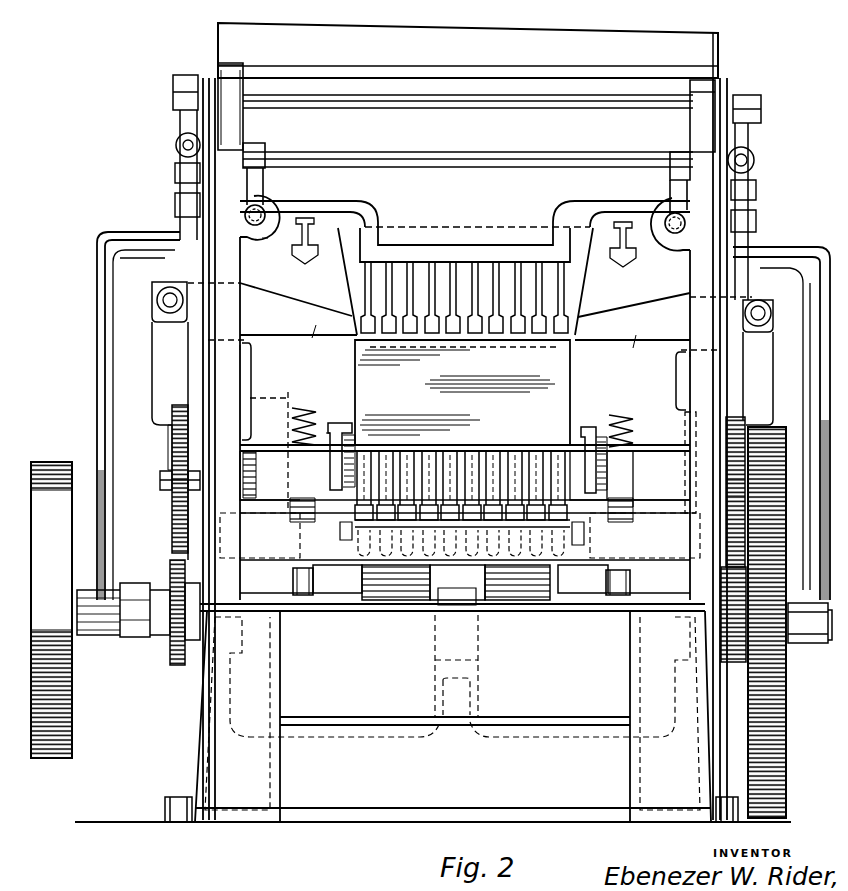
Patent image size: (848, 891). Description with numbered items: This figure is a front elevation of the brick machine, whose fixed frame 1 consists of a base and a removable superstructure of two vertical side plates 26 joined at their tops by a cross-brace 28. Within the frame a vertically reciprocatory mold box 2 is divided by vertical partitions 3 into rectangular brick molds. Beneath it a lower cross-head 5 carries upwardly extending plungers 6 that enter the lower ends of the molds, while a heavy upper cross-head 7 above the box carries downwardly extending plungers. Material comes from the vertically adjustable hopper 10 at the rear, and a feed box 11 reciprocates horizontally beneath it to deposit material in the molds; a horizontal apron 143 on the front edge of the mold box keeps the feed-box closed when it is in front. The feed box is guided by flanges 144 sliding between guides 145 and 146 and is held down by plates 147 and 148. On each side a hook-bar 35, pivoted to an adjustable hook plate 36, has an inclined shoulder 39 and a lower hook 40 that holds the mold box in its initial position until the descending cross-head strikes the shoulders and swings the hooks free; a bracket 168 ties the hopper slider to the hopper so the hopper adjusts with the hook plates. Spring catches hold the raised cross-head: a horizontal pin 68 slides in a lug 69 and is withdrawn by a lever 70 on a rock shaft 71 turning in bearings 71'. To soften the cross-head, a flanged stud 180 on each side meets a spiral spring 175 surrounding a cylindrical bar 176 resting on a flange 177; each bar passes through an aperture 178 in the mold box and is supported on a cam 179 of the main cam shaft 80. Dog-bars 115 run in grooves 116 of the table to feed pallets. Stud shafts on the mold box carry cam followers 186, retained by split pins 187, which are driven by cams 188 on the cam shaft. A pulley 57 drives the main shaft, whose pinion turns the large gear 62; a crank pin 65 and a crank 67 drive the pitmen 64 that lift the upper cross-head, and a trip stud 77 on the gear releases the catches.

The frame 1 is at (232, 49).
The cross-brace 28 is at (624, 45).
The side plate 26 is at (234, 130).
The vertically adjustable plate 36 is at (170, 96).
The rock shaft 71 is at (468, 131).
The bearing 71' is at (466, 153).
The lever 70 is at (262, 182).
The horizontal pin 68 is at (250, 224).
The lug 69 is at (270, 240).
The upper cross-head 7 is at (465, 215).
The flanged stud 180 is at (330, 232).
The hopper 10 is at (340, 276).
The inclined shoulder 39 is at (245, 342).
The vertically movable bracket 168 is at (464, 347).
The hook-bar 35 is at (250, 378).
The feed box 11 is at (575, 376).
The flange 144 is at (344, 425).
The plate 148 is at (330, 418).
The guide 146 is at (328, 425).
The guide 145 is at (585, 428).
The plate 147 is at (602, 432).
The spiral spring 175 is at (292, 422).
The apron 143 is at (525, 440).
The aperture 178 is at (288, 458).
The mold box 2 is at (259, 475).
The hook 40 is at (670, 500).
The vertical partition 3 is at (418, 493).
The groove 116 is at (592, 504).
The dog-bar 115 is at (335, 534).
The lower cross-head 5 is at (582, 536).
The plunger 6 is at (462, 522).
The flange 177 is at (290, 545).
The cylindrical bar 176 is at (290, 578).
The main cam shaft 80 is at (465, 582).
The cam 179 is at (310, 612).
The cam follower 186 is at (174, 449).
The split pin 187 is at (163, 490).
The pitman 64 is at (114, 506).
The trip stud 77 is at (752, 548).
The crank 67 is at (135, 640).
The cam 188 is at (175, 666).
The crank pin 65 is at (826, 650).
The pulley 57 is at (72, 746).
The gear 62 is at (781, 752).